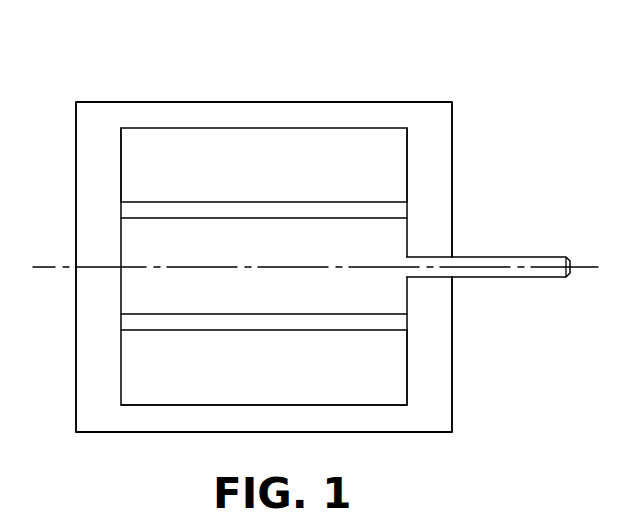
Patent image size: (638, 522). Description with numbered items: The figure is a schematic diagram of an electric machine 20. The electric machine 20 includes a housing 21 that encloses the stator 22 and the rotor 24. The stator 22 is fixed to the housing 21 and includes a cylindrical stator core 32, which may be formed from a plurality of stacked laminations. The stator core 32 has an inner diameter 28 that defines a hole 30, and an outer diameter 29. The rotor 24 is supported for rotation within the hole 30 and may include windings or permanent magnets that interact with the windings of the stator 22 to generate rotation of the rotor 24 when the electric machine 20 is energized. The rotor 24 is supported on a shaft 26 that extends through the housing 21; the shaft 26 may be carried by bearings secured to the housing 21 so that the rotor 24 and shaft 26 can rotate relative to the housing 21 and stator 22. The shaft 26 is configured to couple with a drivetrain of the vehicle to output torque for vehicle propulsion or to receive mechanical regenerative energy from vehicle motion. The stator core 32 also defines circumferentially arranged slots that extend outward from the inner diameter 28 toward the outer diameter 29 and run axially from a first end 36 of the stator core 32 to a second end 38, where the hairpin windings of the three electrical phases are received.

The electric machine 20 is at (443, 52).
The housing 21 is at (270, 112).
The stator 22 is at (185, 140).
The rotor 24 is at (137, 247).
The shaft 26 is at (495, 257).
The inner diameter 28 is at (387, 204).
The outer diameter 29 is at (180, 408).
The hole 30 is at (390, 322).
The stator core 32 is at (407, 167).
The first end 36 is at (120, 170).
The second end 38 is at (407, 365).